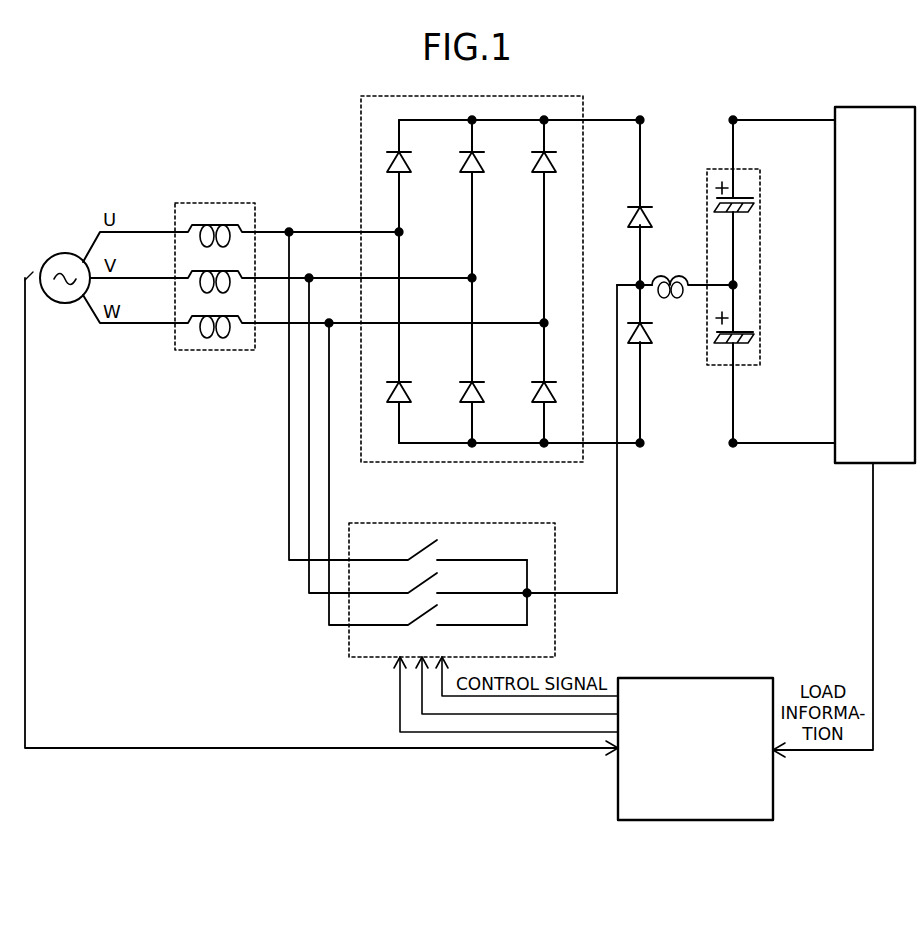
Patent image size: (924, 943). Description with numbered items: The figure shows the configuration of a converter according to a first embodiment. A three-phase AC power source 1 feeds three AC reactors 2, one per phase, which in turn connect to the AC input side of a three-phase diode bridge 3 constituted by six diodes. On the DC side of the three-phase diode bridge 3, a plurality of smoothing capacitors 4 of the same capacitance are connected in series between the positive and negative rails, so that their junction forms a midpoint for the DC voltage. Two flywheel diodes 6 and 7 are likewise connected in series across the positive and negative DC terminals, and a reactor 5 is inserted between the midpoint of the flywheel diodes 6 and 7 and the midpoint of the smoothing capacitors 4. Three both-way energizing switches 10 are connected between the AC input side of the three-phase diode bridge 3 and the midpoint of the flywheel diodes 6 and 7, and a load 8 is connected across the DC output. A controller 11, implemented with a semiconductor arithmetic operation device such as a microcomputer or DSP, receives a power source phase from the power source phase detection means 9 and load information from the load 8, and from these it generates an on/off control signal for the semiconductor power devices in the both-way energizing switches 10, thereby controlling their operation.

The three-phase AC power source 1 is at (63, 253).
The AC reactors 2 is at (213, 203).
The three-phase diode bridge 3 is at (361, 131).
The smoothing capacitors 4 is at (760, 263).
The reactor 5 is at (672, 280).
The flywheel diode 6 is at (635, 207).
The flywheel diode 7 is at (645, 344).
The load 8 is at (835, 166).
The power source phase detection means 9 is at (29, 290).
The both-way energizing switches 10 is at (437, 523).
The controller 11 is at (695, 678).